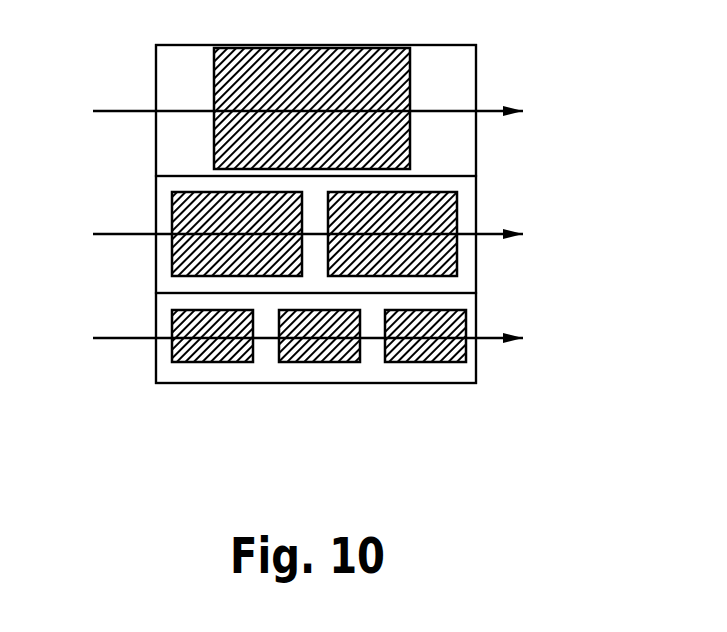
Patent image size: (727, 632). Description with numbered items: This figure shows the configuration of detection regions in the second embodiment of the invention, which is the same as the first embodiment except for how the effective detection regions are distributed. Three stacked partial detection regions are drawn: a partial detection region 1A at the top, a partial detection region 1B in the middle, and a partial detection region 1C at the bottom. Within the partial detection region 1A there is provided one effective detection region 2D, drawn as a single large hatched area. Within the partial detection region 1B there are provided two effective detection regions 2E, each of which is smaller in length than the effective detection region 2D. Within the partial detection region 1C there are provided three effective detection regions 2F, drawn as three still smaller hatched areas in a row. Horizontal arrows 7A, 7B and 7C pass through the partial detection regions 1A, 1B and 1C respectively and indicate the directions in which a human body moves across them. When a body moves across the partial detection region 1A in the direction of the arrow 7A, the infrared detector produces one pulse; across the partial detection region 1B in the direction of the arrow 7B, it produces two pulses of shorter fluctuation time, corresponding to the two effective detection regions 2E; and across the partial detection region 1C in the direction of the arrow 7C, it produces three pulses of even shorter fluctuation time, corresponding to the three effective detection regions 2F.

The partial detection region 1A is at (156, 83).
The partial detection region 1B is at (156, 216).
The partial detection region 1C is at (156, 325).
The effective detection region 2D is at (410, 73).
The effective detection regions 2E is at (457, 196).
The effective detection regions 2F is at (466, 318).
The arrow 7A is at (512, 108).
The arrow 7B is at (512, 231).
The arrow 7C is at (515, 343).